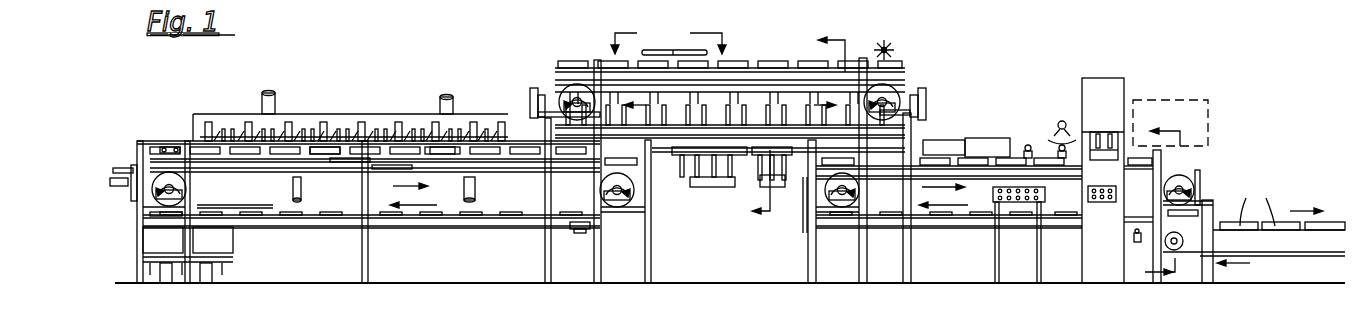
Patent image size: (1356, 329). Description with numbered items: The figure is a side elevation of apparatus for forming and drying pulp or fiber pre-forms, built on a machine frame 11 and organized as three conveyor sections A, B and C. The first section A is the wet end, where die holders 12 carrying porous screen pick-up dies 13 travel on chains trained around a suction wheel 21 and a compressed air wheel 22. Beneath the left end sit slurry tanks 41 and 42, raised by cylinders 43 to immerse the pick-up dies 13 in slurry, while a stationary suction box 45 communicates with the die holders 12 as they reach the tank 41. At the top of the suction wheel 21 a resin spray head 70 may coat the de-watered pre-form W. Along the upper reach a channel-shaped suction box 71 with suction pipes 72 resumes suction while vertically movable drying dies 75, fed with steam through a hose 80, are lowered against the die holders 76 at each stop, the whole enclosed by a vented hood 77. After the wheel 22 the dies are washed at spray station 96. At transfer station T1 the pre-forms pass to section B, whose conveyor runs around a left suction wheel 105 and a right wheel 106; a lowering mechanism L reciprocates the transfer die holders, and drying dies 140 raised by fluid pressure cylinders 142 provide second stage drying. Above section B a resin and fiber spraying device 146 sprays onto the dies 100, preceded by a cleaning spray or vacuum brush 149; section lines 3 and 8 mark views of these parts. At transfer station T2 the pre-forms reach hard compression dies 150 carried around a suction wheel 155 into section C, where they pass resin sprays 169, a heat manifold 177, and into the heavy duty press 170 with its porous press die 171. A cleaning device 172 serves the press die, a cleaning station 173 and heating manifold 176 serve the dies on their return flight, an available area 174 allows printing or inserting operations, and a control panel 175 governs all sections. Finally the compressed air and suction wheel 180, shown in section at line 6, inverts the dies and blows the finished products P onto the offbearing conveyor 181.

The pre-form W is at (121, 158).
The resin spray head 70 is at (172, 146).
The suction wheel 21 is at (178, 180).
The stationary suction box 45 is at (232, 207).
The porous screen pick-up die 13 is at (143, 218).
The slurry tank 42 is at (160, 238).
The slurry tank 41 is at (215, 240).
The cylinders 43 is at (205, 286).
The drying dies 75 is at (318, 150).
The die holders 76 is at (328, 126).
The vented hood 77 is at (380, 114).
The hose 80 is at (404, 130).
The suction pipes 72 is at (300, 187).
The channel-shaped suction box 71 is at (326, 170).
The die holders 12 is at (376, 166).
The first conveyor section A is at (453, 261).
The left suction wheel 105 is at (566, 92).
The compressed air wheel 22 is at (607, 180).
The spray station 96 is at (580, 234).
The transfer station T1 is at (616, 256).
The dies 100 is at (775, 62).
The lowering mechanism L is at (730, 105).
The section line 3- 3 is at (671, 36).
The resin and fiber spraying device 146 is at (677, 49).
The section line 8- 8 is at (801, 128).
The cleaning spray or vacuum brush 149 is at (886, 42).
The right wheel 106 is at (900, 82).
The drying dies 140 is at (680, 152).
The fluid pressure cylinders 142 is at (775, 175).
The frame 11 is at (652, 222).
The second conveyor section B is at (729, 262).
The heating manifold 176 is at (800, 232).
The transfer station T2 is at (830, 258).
The suction wheel 155 is at (858, 185).
The third conveyor section C is at (955, 261).
The heat manifold 177 is at (940, 148).
The compression dies 150 is at (975, 160).
The resin sprays 169 is at (1060, 146).
The cleaning device 172 is at (1062, 120).
The control panel 175 is at (1058, 241).
The heavy duty press 170 is at (1110, 90).
The press die 171 is at (1100, 148).
The cleaning station 173 is at (1136, 243).
The available area 174 is at (1195, 99).
The section line 6- 6 is at (1169, 200).
The compressed air and suction wheel 180 is at (1198, 178).
The finished products P is at (1279, 204).
The offbearing conveyor 181 is at (1305, 258).